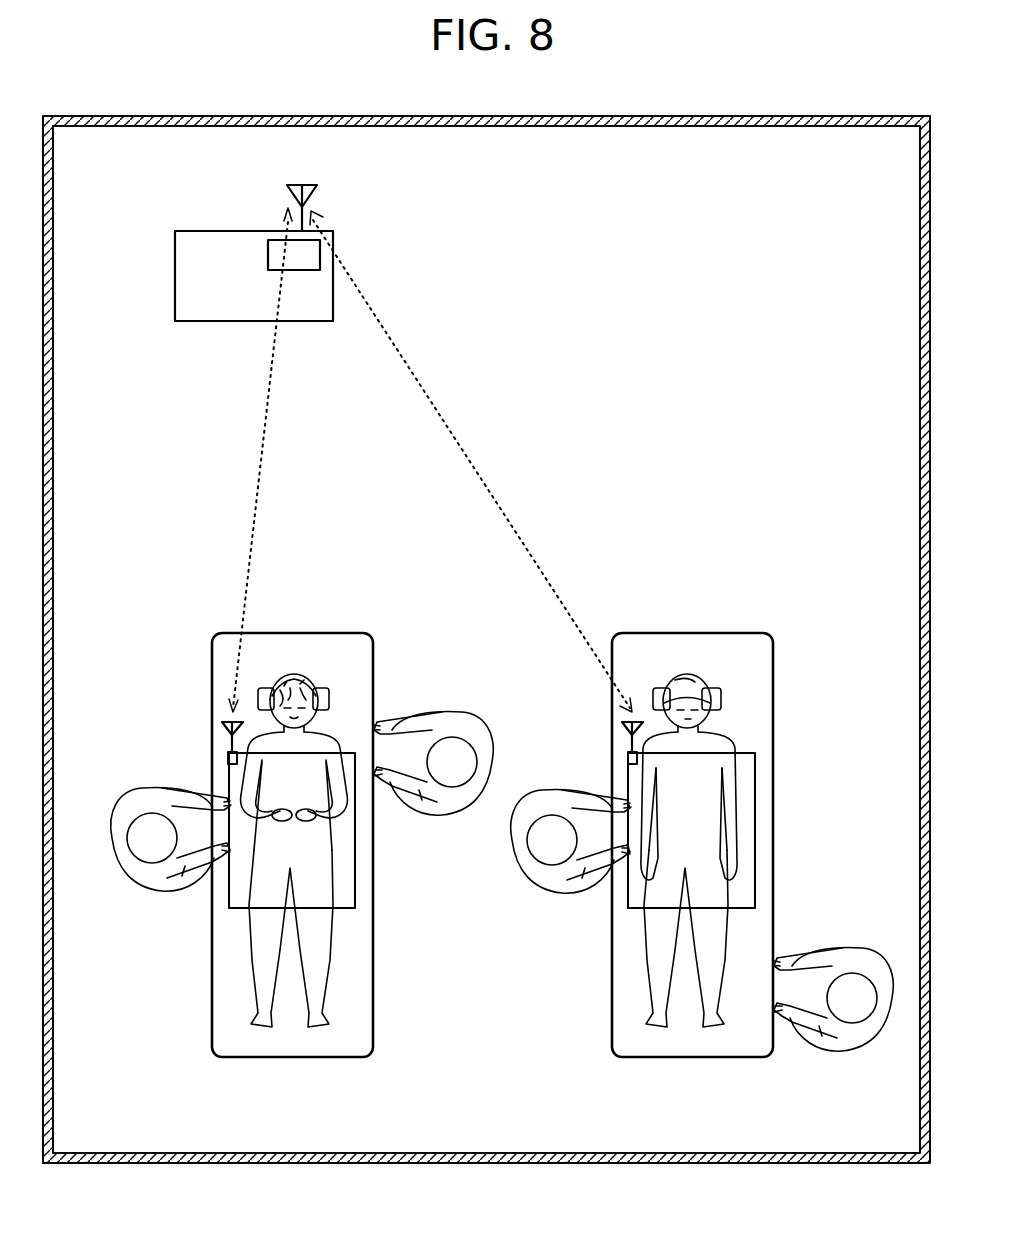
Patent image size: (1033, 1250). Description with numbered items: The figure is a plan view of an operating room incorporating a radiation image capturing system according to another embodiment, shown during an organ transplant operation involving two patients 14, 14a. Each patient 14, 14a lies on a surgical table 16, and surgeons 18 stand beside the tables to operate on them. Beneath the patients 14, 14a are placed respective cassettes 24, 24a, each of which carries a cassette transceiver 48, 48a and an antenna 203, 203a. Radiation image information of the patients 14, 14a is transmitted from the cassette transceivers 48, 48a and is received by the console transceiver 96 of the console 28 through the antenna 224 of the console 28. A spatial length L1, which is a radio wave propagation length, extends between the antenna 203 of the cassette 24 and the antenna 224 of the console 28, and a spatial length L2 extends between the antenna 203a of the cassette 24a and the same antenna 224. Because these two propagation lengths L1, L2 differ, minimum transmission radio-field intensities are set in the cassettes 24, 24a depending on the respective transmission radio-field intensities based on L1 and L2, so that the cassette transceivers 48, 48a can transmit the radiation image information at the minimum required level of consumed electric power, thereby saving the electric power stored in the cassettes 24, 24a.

The console 28 is at (185, 277).
The console transceiver 96 is at (320, 258).
The antenna of the console 224 is at (313, 200).
The surgical table 16 is at (331, 642).
The cassette 24 is at (343, 888).
The cassette 24a is at (745, 882).
The antenna of the cassette 203 is at (221, 732).
The antenna of the cassette 203a is at (621, 732).
The cassette transceiver 48 is at (228, 758).
The cassette transceiver 48a is at (628, 758).
The patient 14 is at (307, 945).
The patient 14a is at (715, 945).
The surgeon 18 is at (150, 887).
The spatial length L1 is at (253, 460).
The spatial length L2 is at (471, 461).